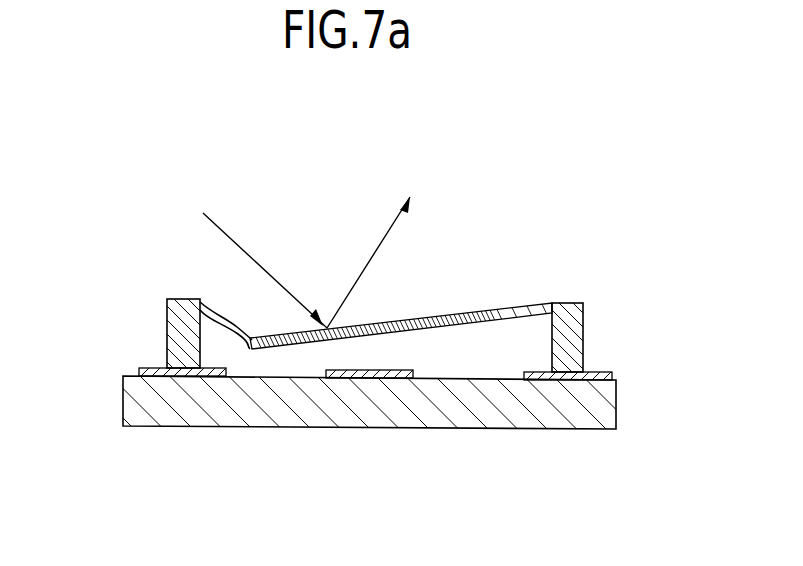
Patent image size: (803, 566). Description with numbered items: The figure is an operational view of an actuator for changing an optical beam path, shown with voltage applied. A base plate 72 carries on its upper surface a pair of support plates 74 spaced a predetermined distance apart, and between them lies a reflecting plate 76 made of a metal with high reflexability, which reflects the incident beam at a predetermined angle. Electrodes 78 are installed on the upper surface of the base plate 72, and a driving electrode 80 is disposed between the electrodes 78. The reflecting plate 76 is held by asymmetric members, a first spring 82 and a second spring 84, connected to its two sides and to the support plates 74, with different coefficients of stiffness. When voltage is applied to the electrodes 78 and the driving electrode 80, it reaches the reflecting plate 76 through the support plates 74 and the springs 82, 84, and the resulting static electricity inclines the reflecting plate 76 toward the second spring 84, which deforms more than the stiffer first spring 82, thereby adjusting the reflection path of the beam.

The base plate 72 is at (370, 417).
The support plates 74 is at (177, 333).
The reflecting plate 76 is at (428, 317).
The electrodes 78 is at (175, 376).
The driving electrode 80 is at (336, 373).
The first spring 82 is at (517, 305).
The second spring 84 is at (204, 312).